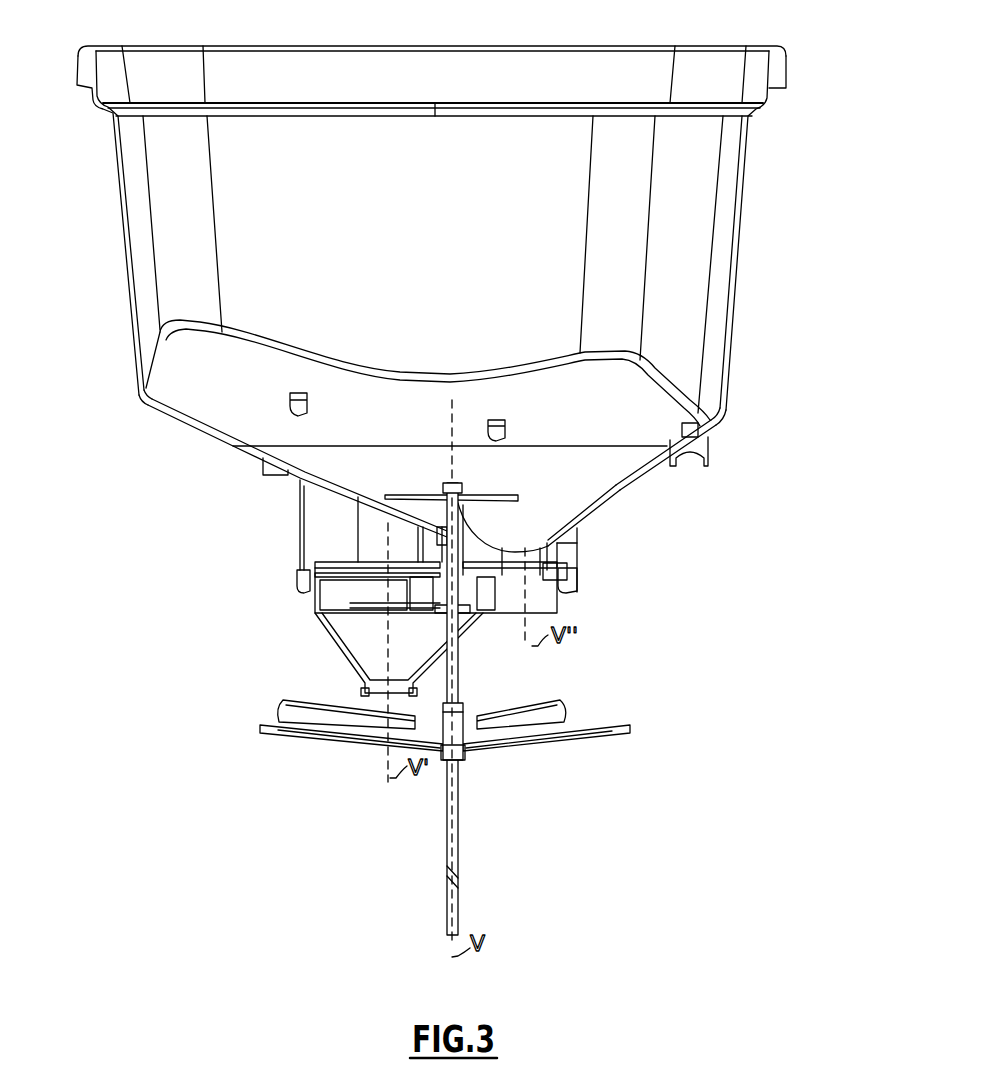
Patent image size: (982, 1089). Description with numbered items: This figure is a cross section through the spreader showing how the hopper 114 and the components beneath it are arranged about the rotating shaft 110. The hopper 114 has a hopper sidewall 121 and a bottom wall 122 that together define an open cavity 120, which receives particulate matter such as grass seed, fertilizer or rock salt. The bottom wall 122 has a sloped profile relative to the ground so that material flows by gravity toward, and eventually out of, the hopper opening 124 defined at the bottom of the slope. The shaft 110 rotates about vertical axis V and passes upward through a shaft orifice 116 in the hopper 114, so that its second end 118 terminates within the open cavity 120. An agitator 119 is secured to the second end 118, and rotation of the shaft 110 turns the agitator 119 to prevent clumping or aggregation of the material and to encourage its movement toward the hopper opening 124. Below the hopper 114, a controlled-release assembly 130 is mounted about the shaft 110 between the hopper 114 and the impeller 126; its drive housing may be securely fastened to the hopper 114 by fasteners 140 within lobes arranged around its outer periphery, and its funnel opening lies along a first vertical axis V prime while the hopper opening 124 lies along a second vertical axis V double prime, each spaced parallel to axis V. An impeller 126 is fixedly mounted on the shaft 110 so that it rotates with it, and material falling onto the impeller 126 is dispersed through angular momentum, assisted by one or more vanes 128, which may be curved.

The shaft 110 is at (481, 671).
The hopper 114 is at (435, 296).
The shaft orifice 116 is at (462, 527).
The second end 118 is at (520, 498).
The agitator 119 is at (477, 492).
The open cavity 120 is at (203, 392).
The hopper sidewall 121 is at (139, 263).
The bottom wall 122 is at (290, 452).
The hopper opening 124 is at (535, 546).
The impeller 126 is at (557, 738).
The vanes 128 is at (322, 700).
The controlled-release assembly 130 is at (290, 547).
The fasteners 140 is at (307, 595).